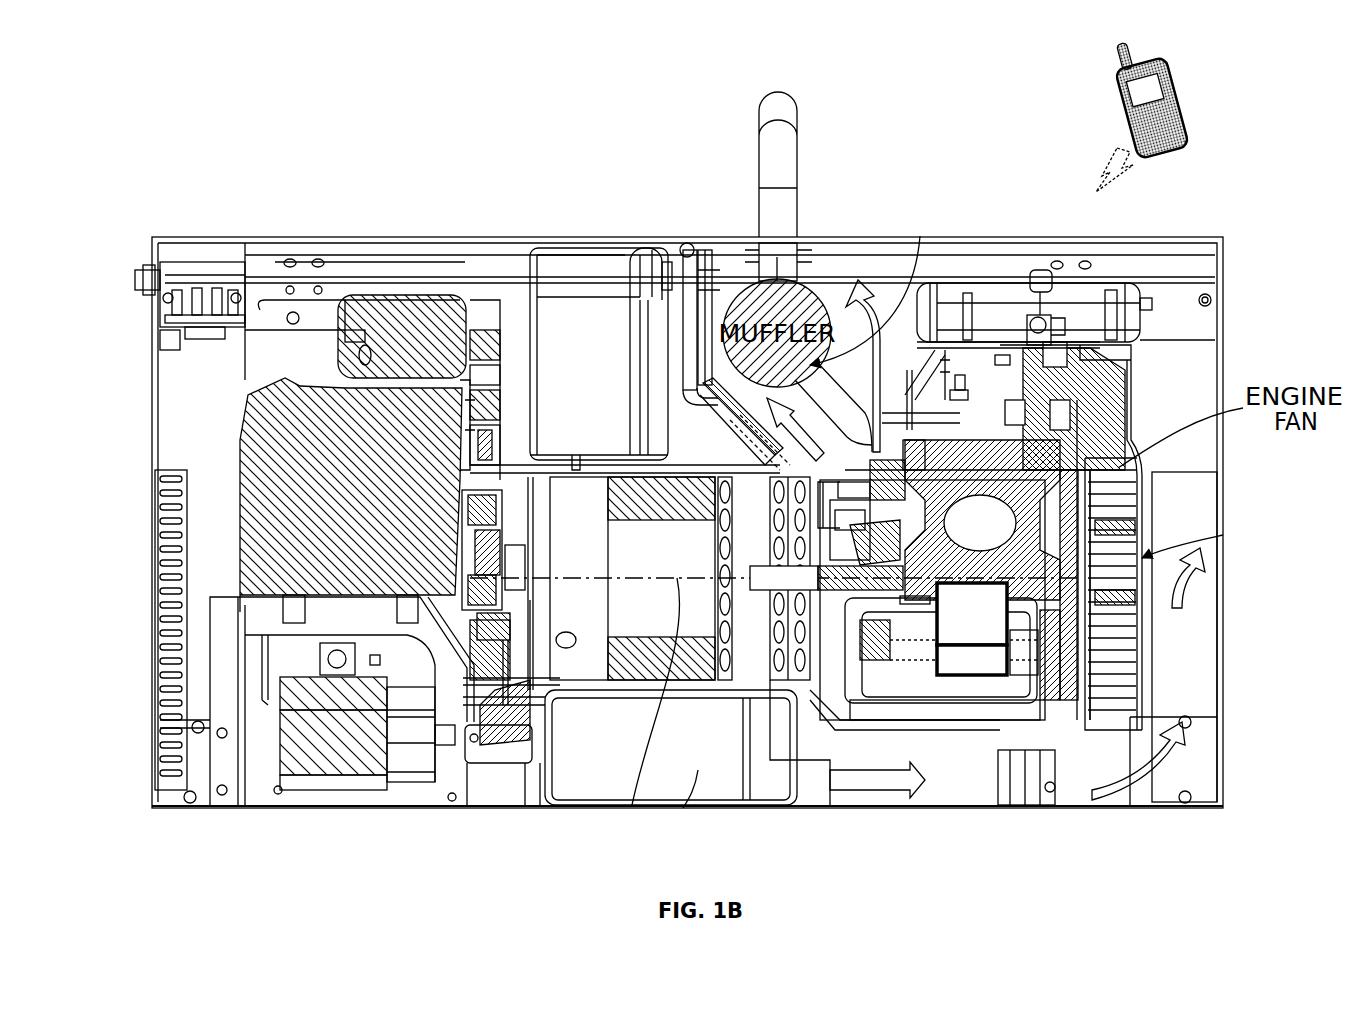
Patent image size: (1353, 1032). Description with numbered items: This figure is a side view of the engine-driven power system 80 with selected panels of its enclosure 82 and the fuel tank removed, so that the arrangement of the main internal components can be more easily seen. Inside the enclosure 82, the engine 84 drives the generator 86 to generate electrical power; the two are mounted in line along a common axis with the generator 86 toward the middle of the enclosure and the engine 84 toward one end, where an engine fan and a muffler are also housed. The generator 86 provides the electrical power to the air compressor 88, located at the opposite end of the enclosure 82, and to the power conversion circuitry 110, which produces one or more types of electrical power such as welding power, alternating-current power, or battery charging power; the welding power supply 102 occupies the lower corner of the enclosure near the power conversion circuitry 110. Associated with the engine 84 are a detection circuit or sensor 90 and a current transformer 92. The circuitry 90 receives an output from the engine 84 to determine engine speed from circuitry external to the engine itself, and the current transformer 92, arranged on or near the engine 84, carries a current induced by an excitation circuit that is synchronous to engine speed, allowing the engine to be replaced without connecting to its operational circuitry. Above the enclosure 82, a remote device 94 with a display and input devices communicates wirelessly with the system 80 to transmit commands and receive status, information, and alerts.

The power system 80 is at (148, 110).
The enclosure 82 is at (340, 234).
The engine 84 is at (971, 617).
The generator 86 is at (627, 665).
The air compressor 88 is at (300, 422).
The detection circuit or sensor 90 is at (972, 614).
The current transformer 92 is at (972, 660).
The remote device 94 is at (1186, 70).
The welding power supply 102 is at (302, 792).
The power conversion circuitry 110 is at (372, 770).